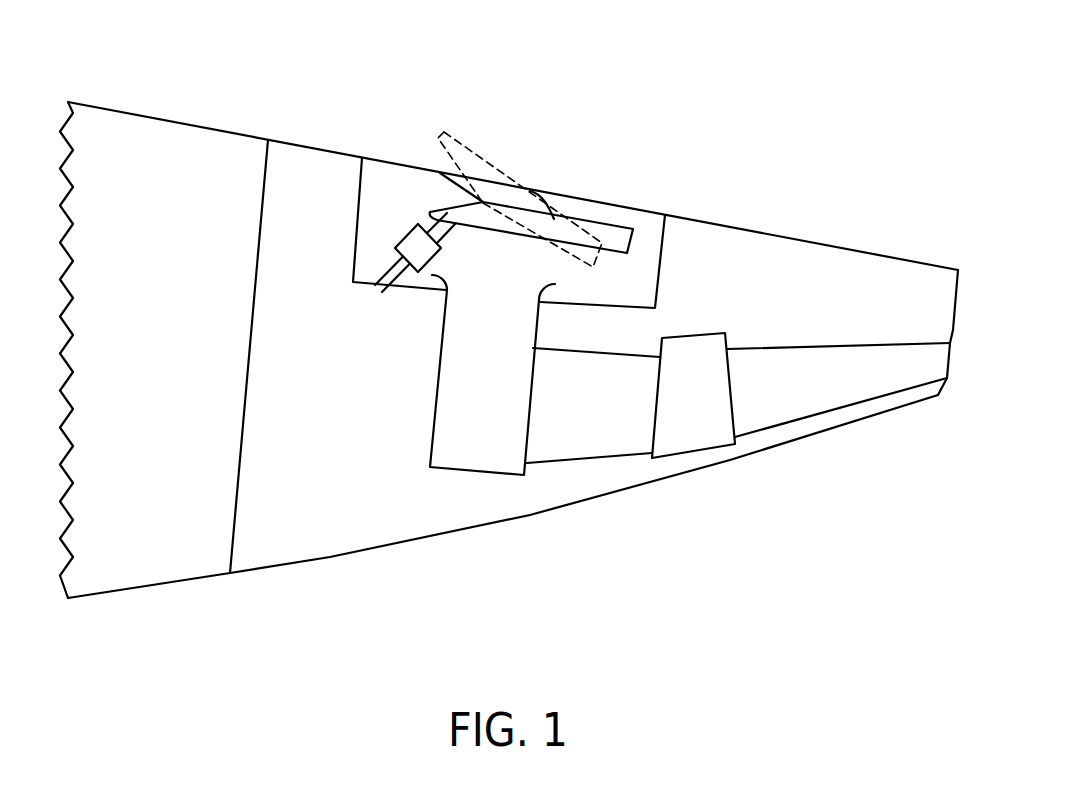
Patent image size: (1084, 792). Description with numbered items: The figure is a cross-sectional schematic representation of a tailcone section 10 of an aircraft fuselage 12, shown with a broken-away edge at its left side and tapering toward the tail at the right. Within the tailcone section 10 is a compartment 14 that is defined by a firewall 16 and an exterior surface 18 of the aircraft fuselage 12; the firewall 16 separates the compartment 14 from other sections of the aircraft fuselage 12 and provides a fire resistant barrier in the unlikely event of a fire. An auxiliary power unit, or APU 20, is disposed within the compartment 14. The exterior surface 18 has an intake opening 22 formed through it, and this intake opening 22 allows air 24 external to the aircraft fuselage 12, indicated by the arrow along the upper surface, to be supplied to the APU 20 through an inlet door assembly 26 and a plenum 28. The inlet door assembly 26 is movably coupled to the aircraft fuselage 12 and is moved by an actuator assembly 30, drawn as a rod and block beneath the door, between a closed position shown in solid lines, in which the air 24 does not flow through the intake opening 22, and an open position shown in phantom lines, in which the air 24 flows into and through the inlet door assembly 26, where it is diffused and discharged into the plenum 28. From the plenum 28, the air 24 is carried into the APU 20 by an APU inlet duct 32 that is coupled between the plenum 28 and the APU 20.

The tailcone section 10 is at (927, 260).
The aircraft fuselage 12 is at (509, 521).
The compartment 14 is at (345, 482).
The firewall 16 is at (246, 380).
The exterior surface 18 is at (298, 140).
The auxiliary power unit (APU) 20 is at (713, 411).
The intake opening 22 is at (438, 173).
The air 24 is at (400, 146).
The inlet door assembly 26 is at (511, 198).
The plenum 28 is at (650, 286).
The actuator assembly 30 is at (400, 246).
The APU inlet duct 32 is at (437, 381).